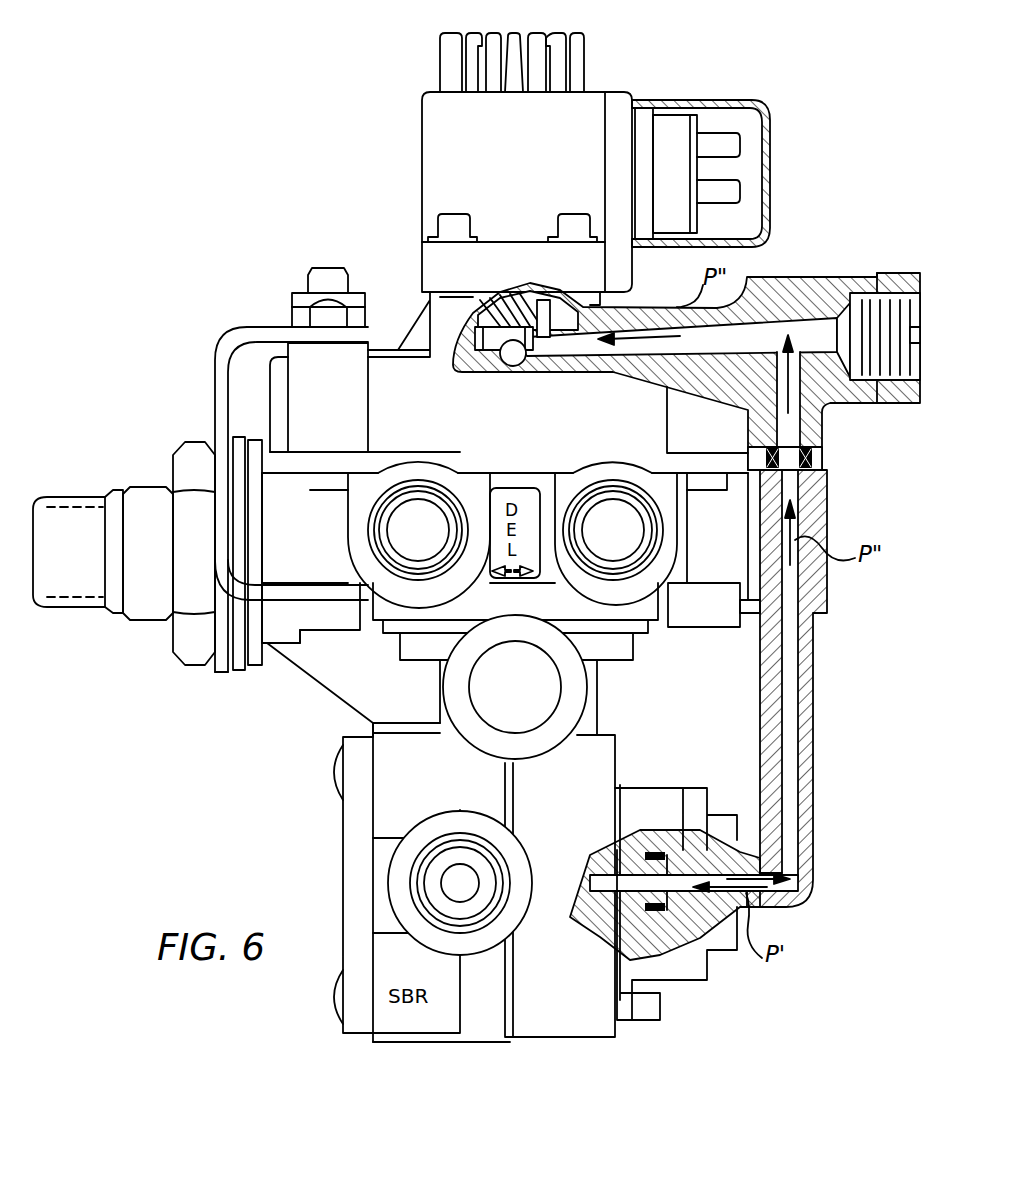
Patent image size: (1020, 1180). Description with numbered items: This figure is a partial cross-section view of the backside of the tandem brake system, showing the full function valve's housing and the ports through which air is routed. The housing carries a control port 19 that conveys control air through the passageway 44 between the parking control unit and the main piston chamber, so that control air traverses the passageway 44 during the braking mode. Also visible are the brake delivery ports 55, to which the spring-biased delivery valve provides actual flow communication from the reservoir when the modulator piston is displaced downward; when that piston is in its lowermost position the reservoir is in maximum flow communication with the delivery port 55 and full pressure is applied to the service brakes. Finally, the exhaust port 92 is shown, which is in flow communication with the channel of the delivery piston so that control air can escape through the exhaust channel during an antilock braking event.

The control port 19 is at (600, 308).
The brake delivery port 55 is at (600, 486).
The exhaust port 92 is at (553, 693).
The passageway 44 is at (793, 696).